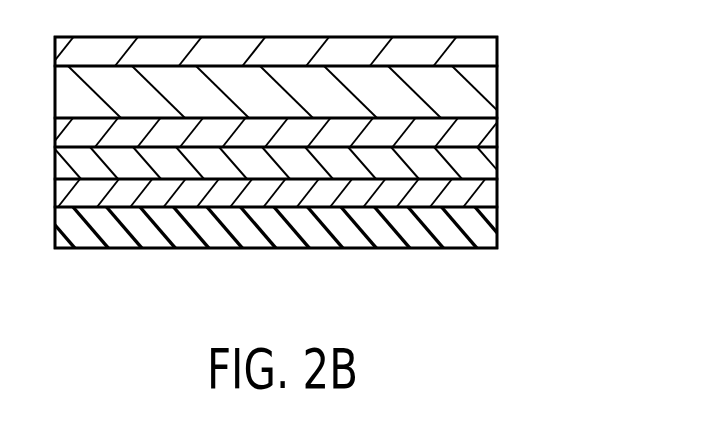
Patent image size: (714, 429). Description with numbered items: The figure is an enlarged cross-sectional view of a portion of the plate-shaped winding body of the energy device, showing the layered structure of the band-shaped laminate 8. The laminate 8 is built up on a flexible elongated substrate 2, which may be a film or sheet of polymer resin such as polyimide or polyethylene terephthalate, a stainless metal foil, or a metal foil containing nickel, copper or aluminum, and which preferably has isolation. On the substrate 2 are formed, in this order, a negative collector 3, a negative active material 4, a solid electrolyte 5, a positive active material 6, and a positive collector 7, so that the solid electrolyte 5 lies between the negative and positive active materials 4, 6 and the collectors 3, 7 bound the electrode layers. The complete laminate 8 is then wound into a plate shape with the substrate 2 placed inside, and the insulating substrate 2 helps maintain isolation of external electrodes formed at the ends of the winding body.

The flexible elongated substrate 2 is at (497, 225).
The negative collector 3 is at (497, 190).
The negative active material 4 is at (497, 163).
The solid electrolyte 5 is at (497, 128).
The positive active material 6 is at (497, 90).
The positive collector 7 is at (497, 50).
The band-shaped laminate 8 is at (585, 15).